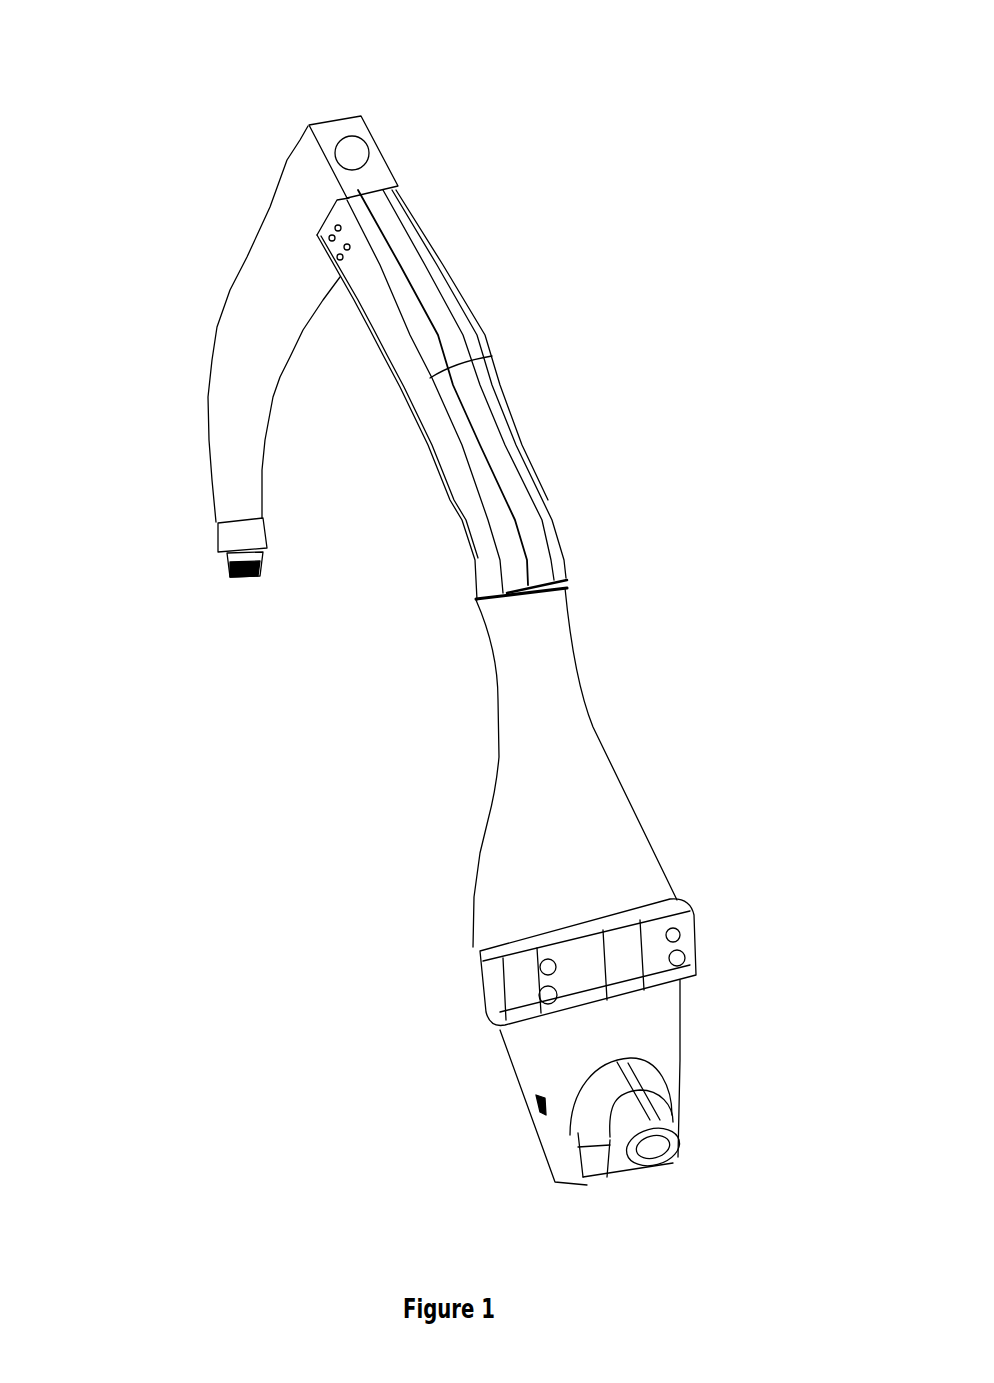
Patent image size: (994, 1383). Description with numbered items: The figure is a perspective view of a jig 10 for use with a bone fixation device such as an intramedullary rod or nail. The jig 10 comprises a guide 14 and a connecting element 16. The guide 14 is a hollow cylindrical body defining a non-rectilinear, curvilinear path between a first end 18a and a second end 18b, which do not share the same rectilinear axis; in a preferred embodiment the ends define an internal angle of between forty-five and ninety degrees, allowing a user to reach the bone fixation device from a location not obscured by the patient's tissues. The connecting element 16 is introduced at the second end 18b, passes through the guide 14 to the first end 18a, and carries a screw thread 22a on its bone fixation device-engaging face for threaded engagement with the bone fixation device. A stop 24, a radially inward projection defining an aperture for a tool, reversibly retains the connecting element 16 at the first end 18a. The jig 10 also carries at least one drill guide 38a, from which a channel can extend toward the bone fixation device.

The jig 10 is at (558, 346).
The guide 14 is at (263, 295).
The connecting element 16 is at (229, 576).
The first end 18a is at (265, 551).
The second end 18b is at (350, 160).
The screw thread 22a is at (250, 577).
The stop 24 is at (228, 540).
The drill guide of the jig 38a is at (648, 1145).